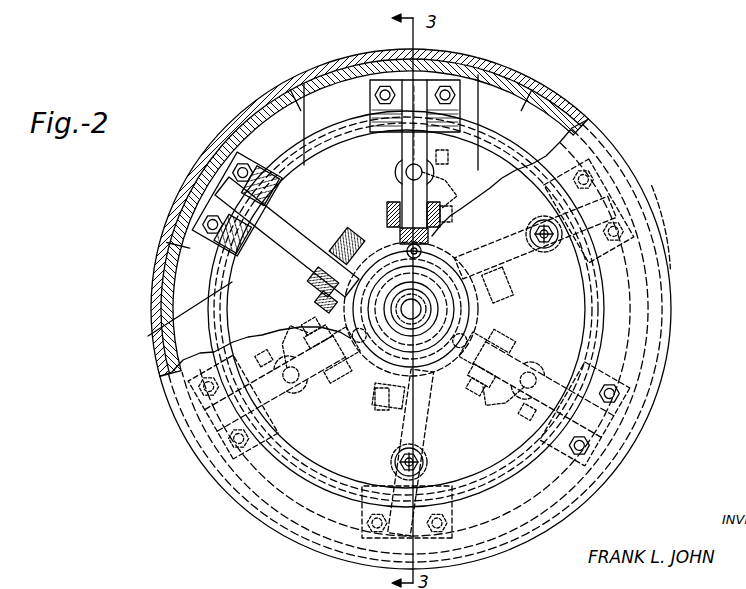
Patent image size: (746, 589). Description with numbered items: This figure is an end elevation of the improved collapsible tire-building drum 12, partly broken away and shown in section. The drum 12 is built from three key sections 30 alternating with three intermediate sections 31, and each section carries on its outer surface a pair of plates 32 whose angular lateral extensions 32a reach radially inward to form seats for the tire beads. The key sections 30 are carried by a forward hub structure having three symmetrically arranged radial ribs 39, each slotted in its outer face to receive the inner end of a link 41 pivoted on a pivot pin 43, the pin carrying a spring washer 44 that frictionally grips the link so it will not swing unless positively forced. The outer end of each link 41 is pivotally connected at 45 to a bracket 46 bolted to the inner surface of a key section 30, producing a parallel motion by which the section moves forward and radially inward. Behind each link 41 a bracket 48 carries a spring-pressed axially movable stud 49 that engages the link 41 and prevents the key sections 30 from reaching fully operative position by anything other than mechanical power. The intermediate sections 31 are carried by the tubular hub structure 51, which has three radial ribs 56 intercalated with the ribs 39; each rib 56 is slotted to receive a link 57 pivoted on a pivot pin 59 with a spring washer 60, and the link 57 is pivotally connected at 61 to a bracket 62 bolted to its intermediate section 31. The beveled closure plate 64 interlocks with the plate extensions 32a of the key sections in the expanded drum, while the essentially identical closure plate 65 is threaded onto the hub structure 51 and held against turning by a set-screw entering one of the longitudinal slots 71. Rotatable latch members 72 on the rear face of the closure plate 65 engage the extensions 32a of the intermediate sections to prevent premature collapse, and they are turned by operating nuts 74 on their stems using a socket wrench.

The drum 12 is at (684, 303).
The key section 30 is at (498, 83).
The intermediate section 31 is at (266, 107).
The plate 32 is at (343, 60).
The angular lateral extension 32a is at (667, 252).
The radially disposed rib 39 is at (402, 200).
The link 41 is at (426, 152).
The pivot pin 43 is at (385, 232).
The spring washer 44 is at (387, 206).
The pivotal connection 45 is at (372, 99).
The bracket 46 is at (428, 83).
The bracket 48 is at (432, 181).
The axially movable stud 49 is at (278, 374).
The hub structure 51 is at (369, 399).
The radially disposed rib 56 is at (338, 236).
The link 57 is at (286, 238).
The pivot pin 59 is at (318, 306).
The spring washer 60 is at (312, 287).
The pivotal connection 61 is at (247, 160).
The bracket 62 is at (216, 247).
The closure plate 64 is at (490, 150).
The closure plate 65 is at (590, 325).
The longitudinal slot 71 is at (519, 328).
The rotatable latch member 72 is at (540, 220).
The operating nut 74 is at (552, 248).